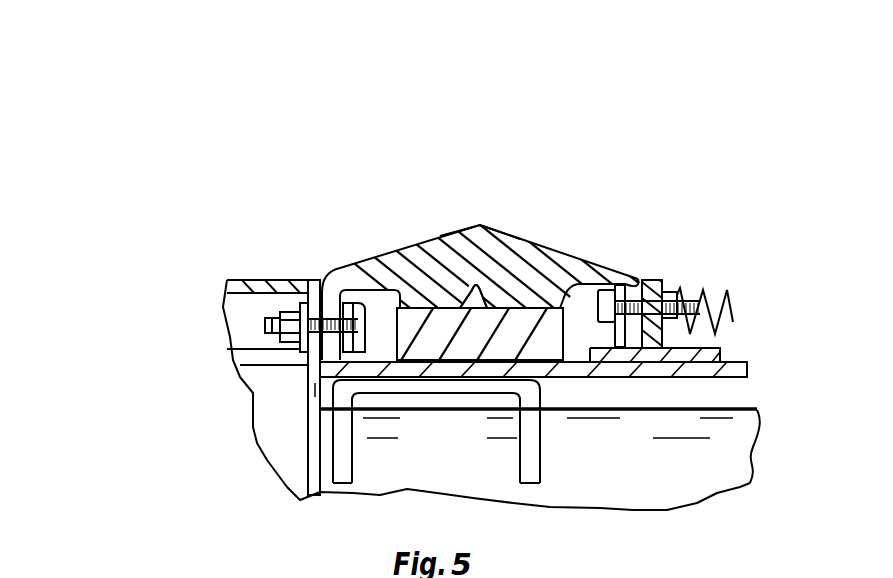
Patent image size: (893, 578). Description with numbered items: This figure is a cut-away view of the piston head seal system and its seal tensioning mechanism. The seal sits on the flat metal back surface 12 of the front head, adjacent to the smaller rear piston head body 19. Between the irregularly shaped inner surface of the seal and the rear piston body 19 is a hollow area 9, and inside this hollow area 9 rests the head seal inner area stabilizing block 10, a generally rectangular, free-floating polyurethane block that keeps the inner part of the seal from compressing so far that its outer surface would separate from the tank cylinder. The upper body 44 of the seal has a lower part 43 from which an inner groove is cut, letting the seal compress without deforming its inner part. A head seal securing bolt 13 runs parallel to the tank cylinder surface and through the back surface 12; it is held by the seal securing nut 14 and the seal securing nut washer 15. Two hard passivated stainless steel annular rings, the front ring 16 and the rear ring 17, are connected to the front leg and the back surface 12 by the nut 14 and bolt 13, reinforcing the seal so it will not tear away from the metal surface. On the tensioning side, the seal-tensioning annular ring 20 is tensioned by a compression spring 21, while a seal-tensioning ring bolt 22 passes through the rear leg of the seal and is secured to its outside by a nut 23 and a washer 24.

The hollow area 9 is at (587, 307).
The head seal inner area stabilizing block 10 is at (305, 494).
The back surface 12 is at (430, 338).
The head seal securing bolt 13 is at (282, 346).
The seal securing nut 14 is at (285, 313).
The seal securing nut washer 15 is at (292, 349).
The front leg annular ring 16 is at (307, 296).
The rear stainless steel ring 17 is at (360, 345).
The rear piston head body 19 is at (697, 367).
The seal-tensioning annular ring 20 is at (642, 282).
The compression spring 21 is at (733, 300).
The seal-tensioning ring bolt 22 is at (645, 352).
The nut 23 is at (680, 280).
The washer 24 is at (645, 275).
The lower part of the upper body 43 is at (455, 295).
The upper body 44 is at (460, 250).